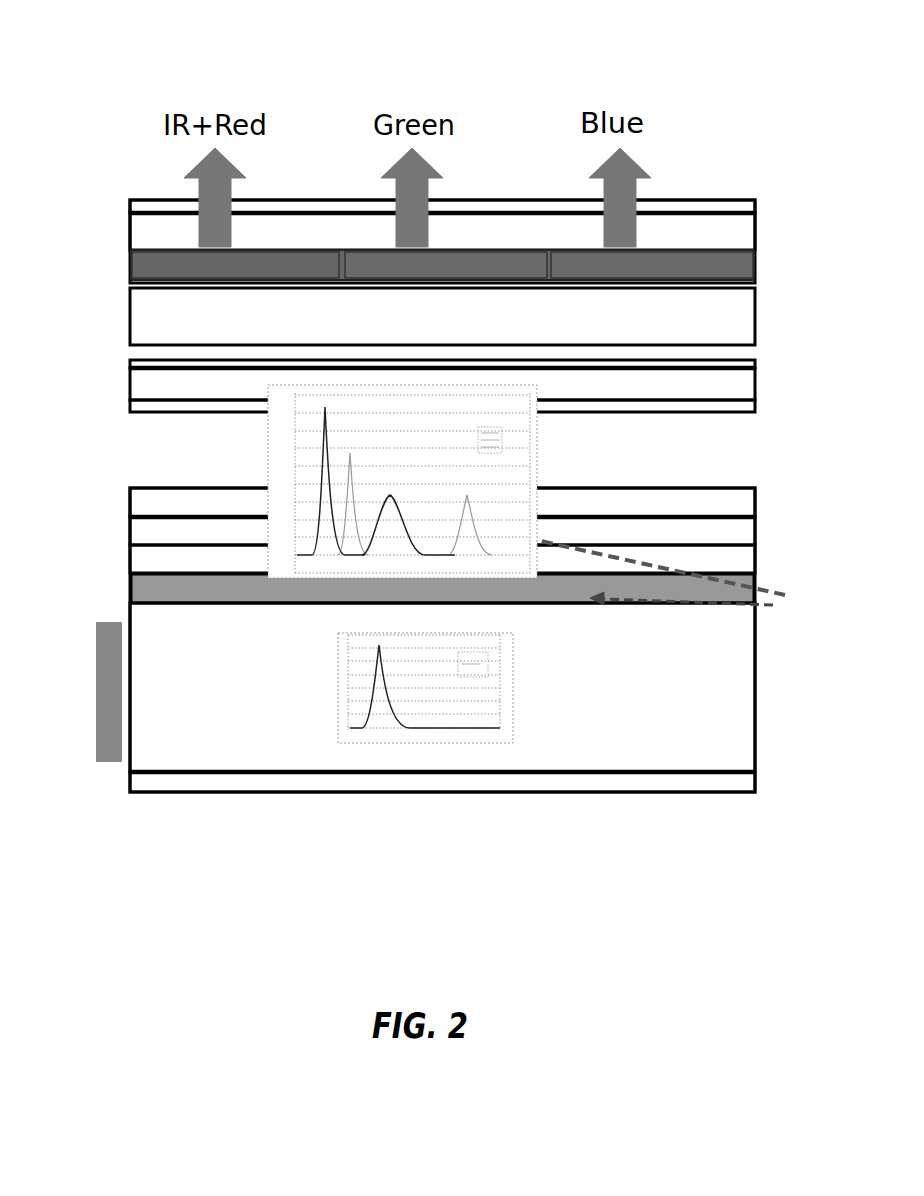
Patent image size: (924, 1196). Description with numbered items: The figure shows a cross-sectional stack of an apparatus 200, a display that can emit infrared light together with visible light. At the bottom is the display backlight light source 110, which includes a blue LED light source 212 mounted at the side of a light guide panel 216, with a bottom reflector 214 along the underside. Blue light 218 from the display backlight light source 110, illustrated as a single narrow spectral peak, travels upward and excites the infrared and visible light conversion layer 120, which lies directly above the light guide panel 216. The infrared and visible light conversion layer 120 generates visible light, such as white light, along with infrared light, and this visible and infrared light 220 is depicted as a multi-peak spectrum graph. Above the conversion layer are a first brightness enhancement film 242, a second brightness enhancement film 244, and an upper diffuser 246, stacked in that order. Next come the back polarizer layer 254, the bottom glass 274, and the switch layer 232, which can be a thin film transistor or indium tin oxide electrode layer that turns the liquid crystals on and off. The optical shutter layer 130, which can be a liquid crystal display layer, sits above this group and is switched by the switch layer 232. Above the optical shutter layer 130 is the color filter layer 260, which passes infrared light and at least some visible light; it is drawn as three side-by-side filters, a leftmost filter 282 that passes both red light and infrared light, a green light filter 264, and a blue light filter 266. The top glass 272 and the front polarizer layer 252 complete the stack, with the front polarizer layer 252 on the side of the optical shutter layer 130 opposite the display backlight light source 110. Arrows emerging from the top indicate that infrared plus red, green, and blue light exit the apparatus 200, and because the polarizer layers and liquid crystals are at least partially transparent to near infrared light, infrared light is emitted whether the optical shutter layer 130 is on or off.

The apparatus 200 is at (742, 60).
The display backlight light source 110 is at (74, 705).
The infrared and visible light conversion layer 120 is at (128, 591).
The optical shutter layer 130 is at (128, 324).
The blue LED light source 212 is at (94, 654).
The bottom reflector 214 is at (128, 786).
The light guide panel 216 is at (757, 694).
The blue light 218 is at (336, 694).
The visible and infrared light 220 is at (267, 460).
The switch layer 232 is at (128, 366).
The first brightness enhancement film 242 is at (128, 566).
The second brightness enhancement film 244 is at (128, 534).
The upper diffuser 246 is at (128, 504).
The front polarizer layer 252 is at (128, 209).
The back polarizer layer 254 is at (128, 411).
The color filter layer 260 is at (128, 271).
The green light filter 264 is at (465, 249).
The blue light filter 266 is at (678, 249).
The top glass 272 is at (128, 234).
The bottom glass 274 is at (128, 388).
The IR and red color filter 282 is at (259, 249).